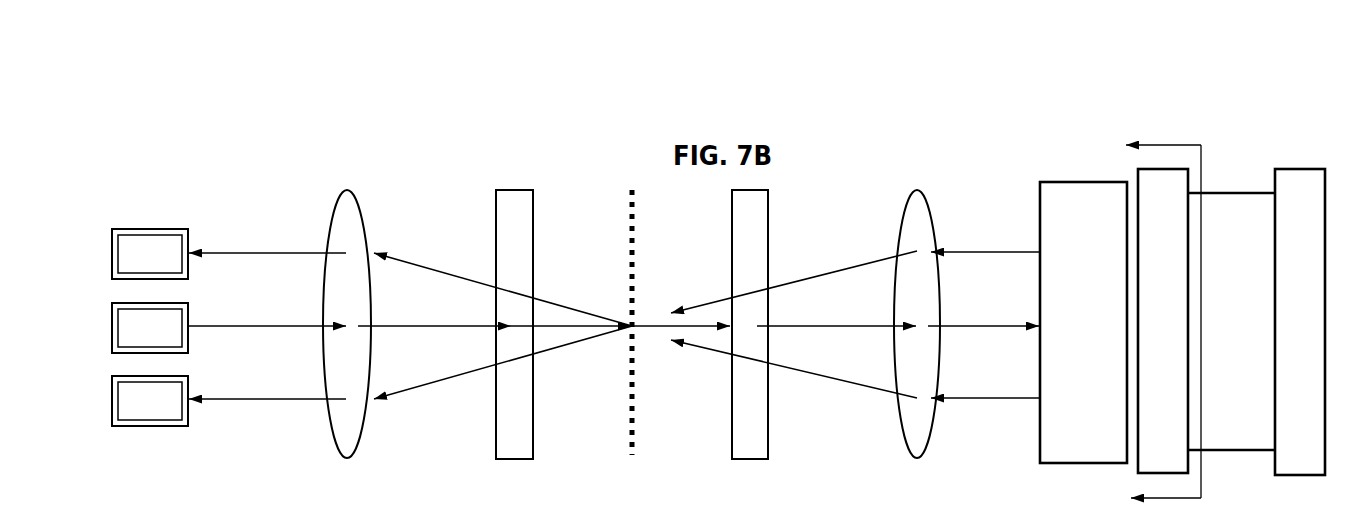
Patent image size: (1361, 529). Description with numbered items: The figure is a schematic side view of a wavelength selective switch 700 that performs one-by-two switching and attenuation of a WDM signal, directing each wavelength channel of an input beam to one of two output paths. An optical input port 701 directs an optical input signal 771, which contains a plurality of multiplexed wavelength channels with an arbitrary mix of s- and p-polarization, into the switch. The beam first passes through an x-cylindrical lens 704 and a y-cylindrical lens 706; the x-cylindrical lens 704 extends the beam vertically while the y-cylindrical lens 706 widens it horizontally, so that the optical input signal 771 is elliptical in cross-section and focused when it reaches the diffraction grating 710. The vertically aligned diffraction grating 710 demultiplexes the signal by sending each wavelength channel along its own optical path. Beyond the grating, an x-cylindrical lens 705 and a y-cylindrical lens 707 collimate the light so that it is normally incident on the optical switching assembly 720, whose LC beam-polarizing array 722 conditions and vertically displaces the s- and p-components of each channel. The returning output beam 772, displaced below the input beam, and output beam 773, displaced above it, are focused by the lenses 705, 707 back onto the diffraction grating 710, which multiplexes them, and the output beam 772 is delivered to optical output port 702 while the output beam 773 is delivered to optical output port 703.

The wavelength selective switch 700 is at (299, 136).
The optical input port 701 is at (150, 328).
The optical output port 702 is at (150, 254).
The optical output port 703 is at (150, 401).
The x-cylindrical lens 704 is at (353, 433).
The x-cylindrical lens 705 is at (917, 433).
The y-cylindrical lens 706 is at (518, 433).
The y-cylindrical lens 707 is at (752, 433).
The diffraction grating 710 is at (632, 452).
The optical switching assembly 720 is at (1032, 133).
The LC beam-polarizing array 722 is at (1163, 332).
The optical input signal 771 is at (290, 326).
The output beam 772 is at (292, 253).
The output beam 773 is at (287, 399).